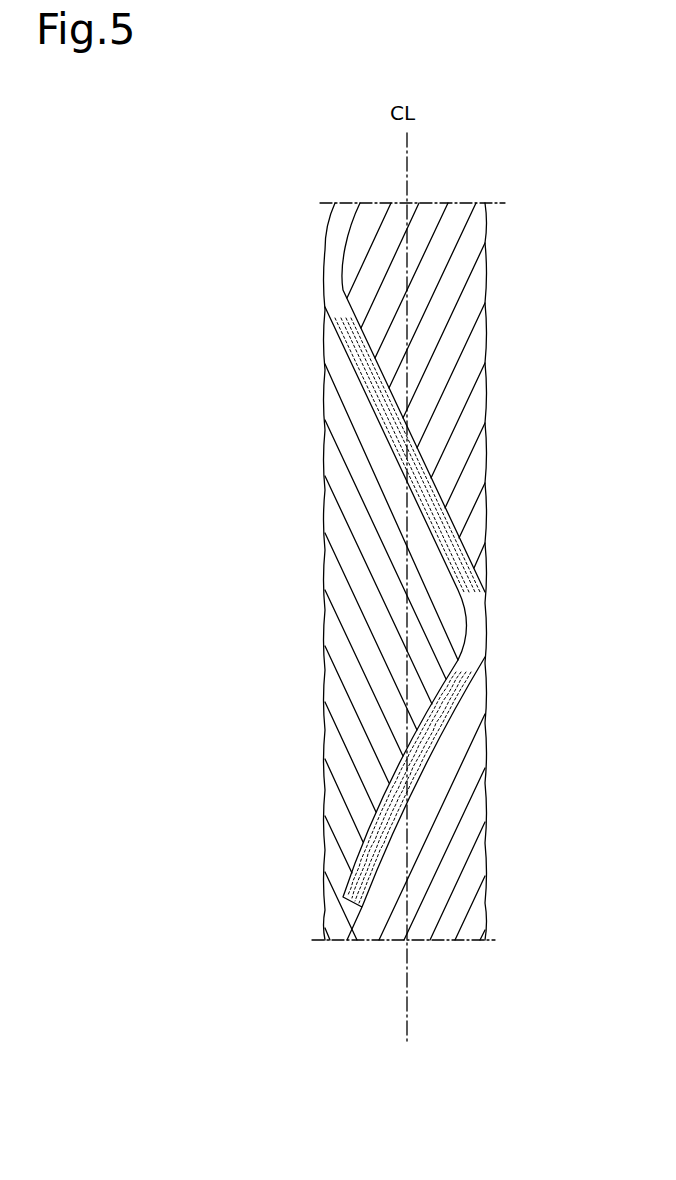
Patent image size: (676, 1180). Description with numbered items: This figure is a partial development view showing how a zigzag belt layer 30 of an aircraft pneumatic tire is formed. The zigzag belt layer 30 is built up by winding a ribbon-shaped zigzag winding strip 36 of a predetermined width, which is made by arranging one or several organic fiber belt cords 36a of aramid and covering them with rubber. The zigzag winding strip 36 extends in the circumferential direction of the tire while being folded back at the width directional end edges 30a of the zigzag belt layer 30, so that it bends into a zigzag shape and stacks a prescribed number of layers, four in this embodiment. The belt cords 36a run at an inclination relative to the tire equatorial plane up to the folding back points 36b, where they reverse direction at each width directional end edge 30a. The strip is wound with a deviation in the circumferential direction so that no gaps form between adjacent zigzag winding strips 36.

The zigzag belt layer 30 is at (408, 532).
The width directional end edge 30a is at (486, 320).
The zigzag winding strip 36 is at (453, 571).
The belt cord 36a is at (434, 772).
The folding back point 36b is at (480, 618).